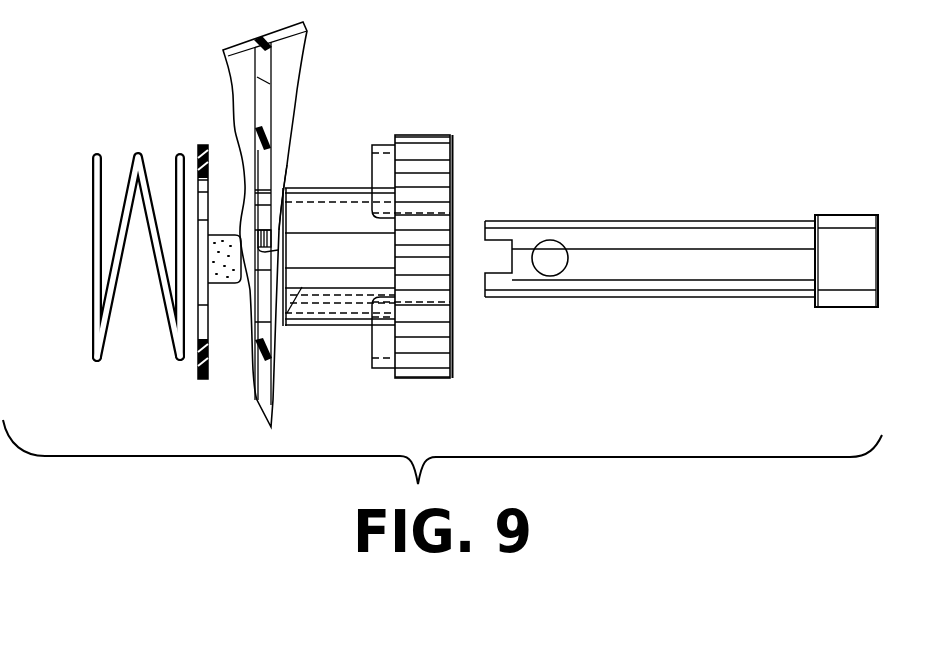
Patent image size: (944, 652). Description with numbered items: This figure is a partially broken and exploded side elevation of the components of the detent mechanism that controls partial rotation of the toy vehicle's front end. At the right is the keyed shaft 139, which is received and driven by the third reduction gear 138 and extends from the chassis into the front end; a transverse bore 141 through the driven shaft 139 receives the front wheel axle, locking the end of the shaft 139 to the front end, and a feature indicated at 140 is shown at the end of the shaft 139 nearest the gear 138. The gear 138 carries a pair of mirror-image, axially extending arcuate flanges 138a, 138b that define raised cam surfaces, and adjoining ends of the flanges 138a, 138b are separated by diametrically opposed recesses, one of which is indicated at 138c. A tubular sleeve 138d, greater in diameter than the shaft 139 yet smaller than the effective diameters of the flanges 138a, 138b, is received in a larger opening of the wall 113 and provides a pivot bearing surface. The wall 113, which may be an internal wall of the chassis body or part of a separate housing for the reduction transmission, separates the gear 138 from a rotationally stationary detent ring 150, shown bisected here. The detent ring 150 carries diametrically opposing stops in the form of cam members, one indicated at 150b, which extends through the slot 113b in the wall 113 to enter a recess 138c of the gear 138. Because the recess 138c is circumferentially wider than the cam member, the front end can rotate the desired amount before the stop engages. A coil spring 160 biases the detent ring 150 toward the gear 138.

The wall 113 is at (273, 89).
The slot 113b is at (284, 182).
The third reduction gear 138 is at (428, 135).
The arcuate flange 138a is at (383, 145).
The arcuate flange 138b is at (379, 369).
The recess 138c is at (386, 256).
The tubular sleeve 138d is at (284, 356).
The keyed shaft 139 is at (688, 212).
The notch 140 is at (497, 257).
The transverse bore 141 is at (550, 268).
The detent ring 150 is at (204, 144).
The cam member 150b is at (218, 283).
The coil spring 160 is at (94, 157).